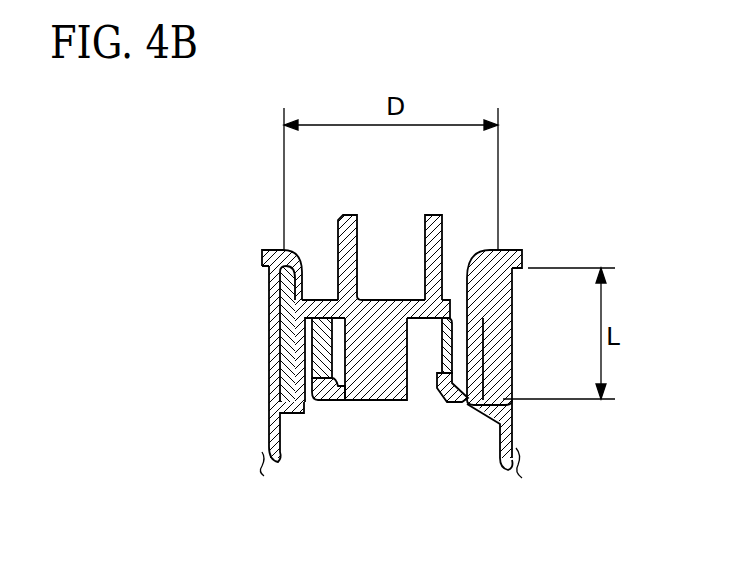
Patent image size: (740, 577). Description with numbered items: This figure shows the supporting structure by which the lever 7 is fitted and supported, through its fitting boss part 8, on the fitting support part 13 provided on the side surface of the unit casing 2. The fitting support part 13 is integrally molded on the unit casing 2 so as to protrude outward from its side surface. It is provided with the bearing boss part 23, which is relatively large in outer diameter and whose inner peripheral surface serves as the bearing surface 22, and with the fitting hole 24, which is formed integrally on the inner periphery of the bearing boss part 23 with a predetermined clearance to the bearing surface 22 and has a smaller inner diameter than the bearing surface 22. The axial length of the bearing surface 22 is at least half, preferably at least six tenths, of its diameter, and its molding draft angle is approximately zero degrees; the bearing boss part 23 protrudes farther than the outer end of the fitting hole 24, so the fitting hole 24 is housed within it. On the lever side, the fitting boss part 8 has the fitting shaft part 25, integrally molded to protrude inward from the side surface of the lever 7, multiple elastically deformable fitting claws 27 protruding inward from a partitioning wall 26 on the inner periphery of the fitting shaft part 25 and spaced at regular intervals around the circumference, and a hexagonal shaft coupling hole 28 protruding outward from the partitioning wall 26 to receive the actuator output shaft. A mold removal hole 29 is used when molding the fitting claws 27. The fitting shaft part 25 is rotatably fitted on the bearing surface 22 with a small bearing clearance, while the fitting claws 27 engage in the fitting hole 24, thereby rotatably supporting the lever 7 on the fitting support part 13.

The unit casing 2 is at (521, 470).
The lever 7 is at (270, 256).
The fitting boss part 8 is at (328, 218).
The fitting support part 13 is at (252, 415).
The bearing surface 22 is at (297, 323).
The bearing boss part 23 is at (287, 368).
The fitting hole 24 is at (343, 392).
The fitting shaft part 25 is at (488, 290).
The partitioning wall 26 is at (392, 300).
The fitting claws 27 is at (443, 378).
The hexagonal shaft coupling hole 28 is at (418, 228).
The mold removal hole 29 is at (460, 307).